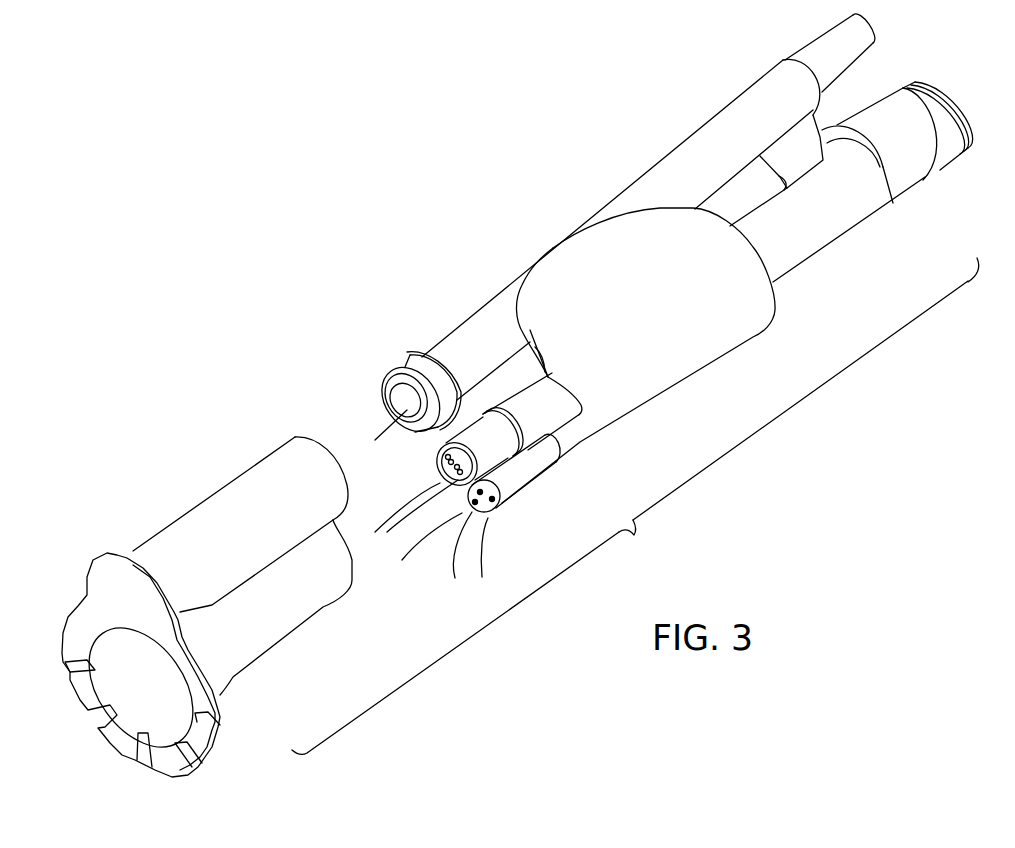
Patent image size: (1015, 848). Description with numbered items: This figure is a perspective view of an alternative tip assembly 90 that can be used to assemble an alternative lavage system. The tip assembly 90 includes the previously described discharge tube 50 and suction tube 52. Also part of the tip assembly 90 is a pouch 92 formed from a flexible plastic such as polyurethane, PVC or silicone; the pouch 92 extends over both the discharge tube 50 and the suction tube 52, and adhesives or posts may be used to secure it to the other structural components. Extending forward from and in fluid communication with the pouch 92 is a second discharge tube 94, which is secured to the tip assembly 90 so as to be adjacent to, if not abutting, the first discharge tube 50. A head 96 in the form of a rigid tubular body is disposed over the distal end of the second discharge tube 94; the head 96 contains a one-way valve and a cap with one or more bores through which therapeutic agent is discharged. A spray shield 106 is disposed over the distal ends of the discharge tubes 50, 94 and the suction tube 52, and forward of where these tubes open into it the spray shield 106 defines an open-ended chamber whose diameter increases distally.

The discharge tube 50 is at (835, 216).
The suction tube 52 is at (488, 359).
The tip assembly 90 is at (635, 506).
The pouch 92 is at (663, 280).
The second discharge tube 94 is at (583, 444).
The head 96 is at (538, 479).
The spray shield 106 is at (268, 535).